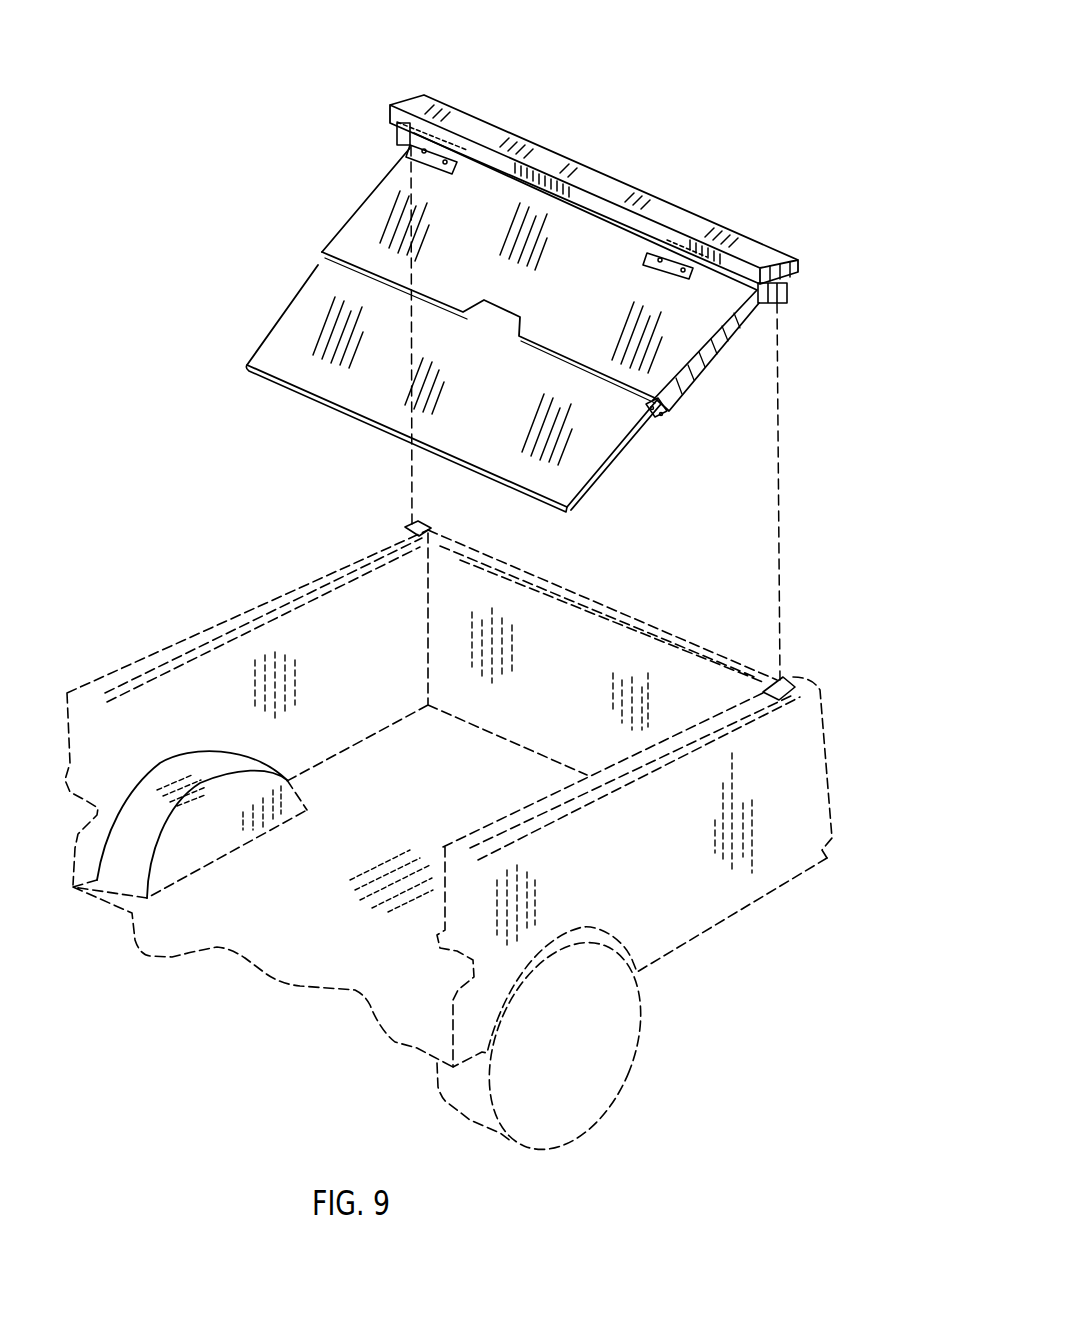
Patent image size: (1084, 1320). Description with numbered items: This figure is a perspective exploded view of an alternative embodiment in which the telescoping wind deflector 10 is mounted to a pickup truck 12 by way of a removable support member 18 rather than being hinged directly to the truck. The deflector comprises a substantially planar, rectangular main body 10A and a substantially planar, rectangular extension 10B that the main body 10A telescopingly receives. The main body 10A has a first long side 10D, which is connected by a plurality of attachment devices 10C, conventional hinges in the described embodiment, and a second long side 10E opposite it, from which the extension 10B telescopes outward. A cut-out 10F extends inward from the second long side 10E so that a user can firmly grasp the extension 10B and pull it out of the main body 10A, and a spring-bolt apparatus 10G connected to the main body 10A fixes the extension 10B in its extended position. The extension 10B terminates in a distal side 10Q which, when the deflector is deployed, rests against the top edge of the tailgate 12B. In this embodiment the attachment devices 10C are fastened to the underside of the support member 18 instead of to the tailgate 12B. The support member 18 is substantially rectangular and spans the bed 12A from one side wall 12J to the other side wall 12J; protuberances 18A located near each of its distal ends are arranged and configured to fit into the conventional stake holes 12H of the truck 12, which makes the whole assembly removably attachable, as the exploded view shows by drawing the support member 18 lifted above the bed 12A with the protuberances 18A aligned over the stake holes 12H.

The telescoping wind deflector 10 is at (233, 246).
The main body 10A is at (680, 345).
The extension 10B is at (277, 355).
The attachment devices 10C is at (437, 145).
The first long side 10D is at (543, 188).
The second long side 10E is at (363, 268).
The cut-out 10F is at (467, 315).
The spring-bolt apparatus 10G is at (648, 418).
The distal side 10Q is at (358, 417).
The support member 18 is at (738, 247).
The protuberances 18A is at (397, 135).
The pickup truck 12 is at (837, 796).
The bed 12A is at (295, 943).
The tailgate 12B is at (630, 617).
The stake holes 12H is at (405, 525).
The side walls 12J is at (190, 693).